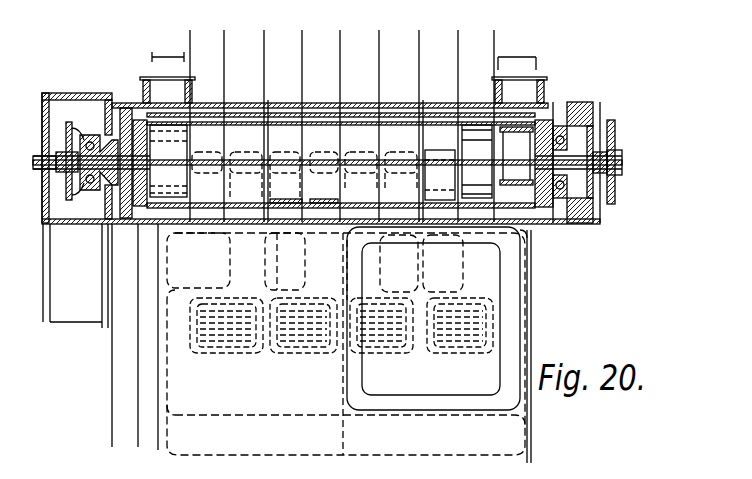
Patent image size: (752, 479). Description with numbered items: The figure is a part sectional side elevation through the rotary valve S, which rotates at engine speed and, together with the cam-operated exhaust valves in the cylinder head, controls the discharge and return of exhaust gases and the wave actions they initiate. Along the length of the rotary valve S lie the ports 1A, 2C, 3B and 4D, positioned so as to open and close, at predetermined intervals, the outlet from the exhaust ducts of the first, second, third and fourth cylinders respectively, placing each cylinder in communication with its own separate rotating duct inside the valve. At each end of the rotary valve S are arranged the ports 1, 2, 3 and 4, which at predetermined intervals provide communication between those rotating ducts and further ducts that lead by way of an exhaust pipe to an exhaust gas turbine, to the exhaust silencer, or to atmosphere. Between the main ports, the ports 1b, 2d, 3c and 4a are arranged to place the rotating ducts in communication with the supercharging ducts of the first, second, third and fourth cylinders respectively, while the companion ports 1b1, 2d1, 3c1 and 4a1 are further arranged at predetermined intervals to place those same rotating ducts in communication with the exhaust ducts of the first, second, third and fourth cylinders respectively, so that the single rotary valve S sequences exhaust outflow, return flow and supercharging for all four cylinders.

The port 1 is at (167, 71).
The port 2 is at (168, 51).
The port 3 is at (358, 71).
The port 4 is at (357, 55).
The port 1A is at (221, 41).
The port 1b1 is at (208, 126).
The port 1b is at (261, 41).
The port 2C is at (299, 41).
The port 2d1 is at (286, 123).
The port 2d is at (337, 41).
The port 3B is at (376, 41).
The port 3c1 is at (361, 116).
The port 3c is at (416, 41).
The port 4D is at (455, 41).
The port 4a1 is at (440, 121).
The port 4a is at (491, 41).
The rotary valve S is at (136, 104).